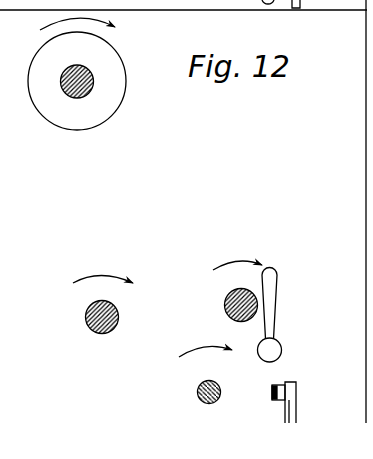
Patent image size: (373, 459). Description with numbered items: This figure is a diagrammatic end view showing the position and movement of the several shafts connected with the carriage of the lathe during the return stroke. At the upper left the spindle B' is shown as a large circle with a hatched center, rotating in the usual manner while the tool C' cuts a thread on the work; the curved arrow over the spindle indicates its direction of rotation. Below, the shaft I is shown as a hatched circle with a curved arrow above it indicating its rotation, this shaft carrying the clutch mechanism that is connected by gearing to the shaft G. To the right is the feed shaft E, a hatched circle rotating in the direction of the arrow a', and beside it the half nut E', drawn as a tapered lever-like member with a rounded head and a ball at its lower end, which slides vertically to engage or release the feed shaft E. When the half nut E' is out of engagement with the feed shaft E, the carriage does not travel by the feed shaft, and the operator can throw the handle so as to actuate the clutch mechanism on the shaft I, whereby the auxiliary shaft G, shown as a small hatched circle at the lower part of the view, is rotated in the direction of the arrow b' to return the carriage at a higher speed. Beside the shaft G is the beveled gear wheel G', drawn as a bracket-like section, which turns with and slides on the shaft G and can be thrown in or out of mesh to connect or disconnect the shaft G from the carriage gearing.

The tool C' is at (67, 74).
The spindle B' is at (78, 92).
The shaft I is at (112, 330).
The feed shaft E is at (222, 308).
The half nut E' is at (283, 315).
The arrow a' is at (237, 255).
The arrow b' is at (205, 360).
The auxiliary shaft G is at (220, 397).
The beveled gear wheel G' is at (303, 402).